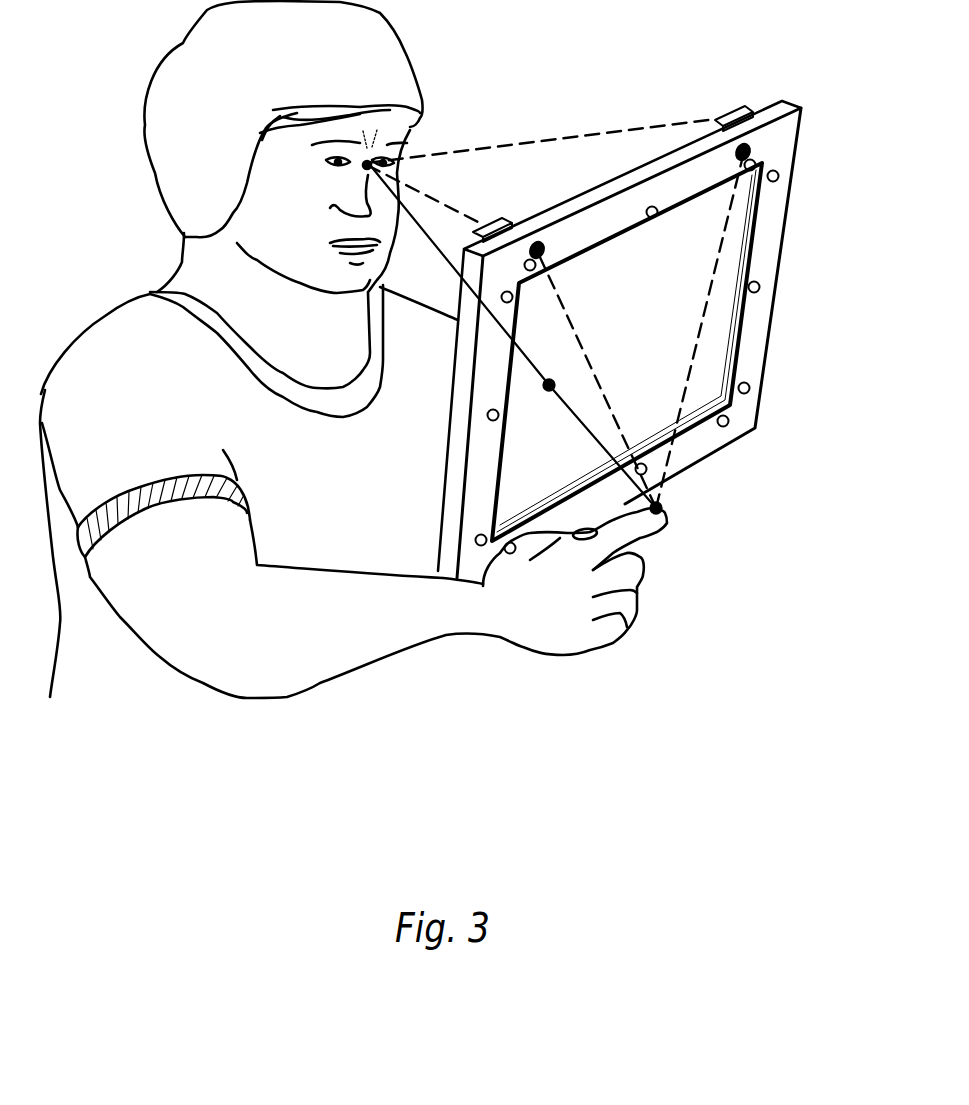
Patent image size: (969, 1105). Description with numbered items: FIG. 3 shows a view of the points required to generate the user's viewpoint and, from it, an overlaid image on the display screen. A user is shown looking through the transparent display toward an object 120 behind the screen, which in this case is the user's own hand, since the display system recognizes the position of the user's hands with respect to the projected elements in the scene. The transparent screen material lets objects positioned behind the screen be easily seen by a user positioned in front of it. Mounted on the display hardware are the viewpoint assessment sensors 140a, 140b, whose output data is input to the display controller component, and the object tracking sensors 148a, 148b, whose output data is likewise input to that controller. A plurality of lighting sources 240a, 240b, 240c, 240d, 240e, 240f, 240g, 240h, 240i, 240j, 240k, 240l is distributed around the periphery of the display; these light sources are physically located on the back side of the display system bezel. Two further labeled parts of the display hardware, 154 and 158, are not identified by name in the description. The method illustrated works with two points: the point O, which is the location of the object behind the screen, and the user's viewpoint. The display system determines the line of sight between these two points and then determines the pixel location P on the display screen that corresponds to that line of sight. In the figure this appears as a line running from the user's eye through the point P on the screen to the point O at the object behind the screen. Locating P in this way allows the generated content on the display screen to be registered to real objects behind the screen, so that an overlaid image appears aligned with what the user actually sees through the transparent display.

The object 120 is at (567, 633).
The viewpoint assessment sensor 140a is at (500, 222).
The viewpoint assessment sensor 140b is at (728, 111).
The object tracking sensor 148a is at (540, 243).
The object tracking sensor 148b is at (745, 145).
The frame 154 is at (766, 232).
The display 158 is at (707, 345).
The light source 240a is at (753, 162).
The light source 240b is at (647, 216).
The light source 240c is at (536, 268).
The light source 240d is at (512, 298).
The light source 240e is at (488, 414).
The light source 240f is at (476, 540).
The light source 240g is at (505, 552).
The light source 240h is at (642, 463).
The light source 240i is at (728, 424).
The light source 240j is at (750, 390).
The light source 240k is at (760, 287).
The light source 240l is at (779, 176).
The pixel location on the display screen P is at (539, 403).
The location of the object behind the screen O is at (675, 507).